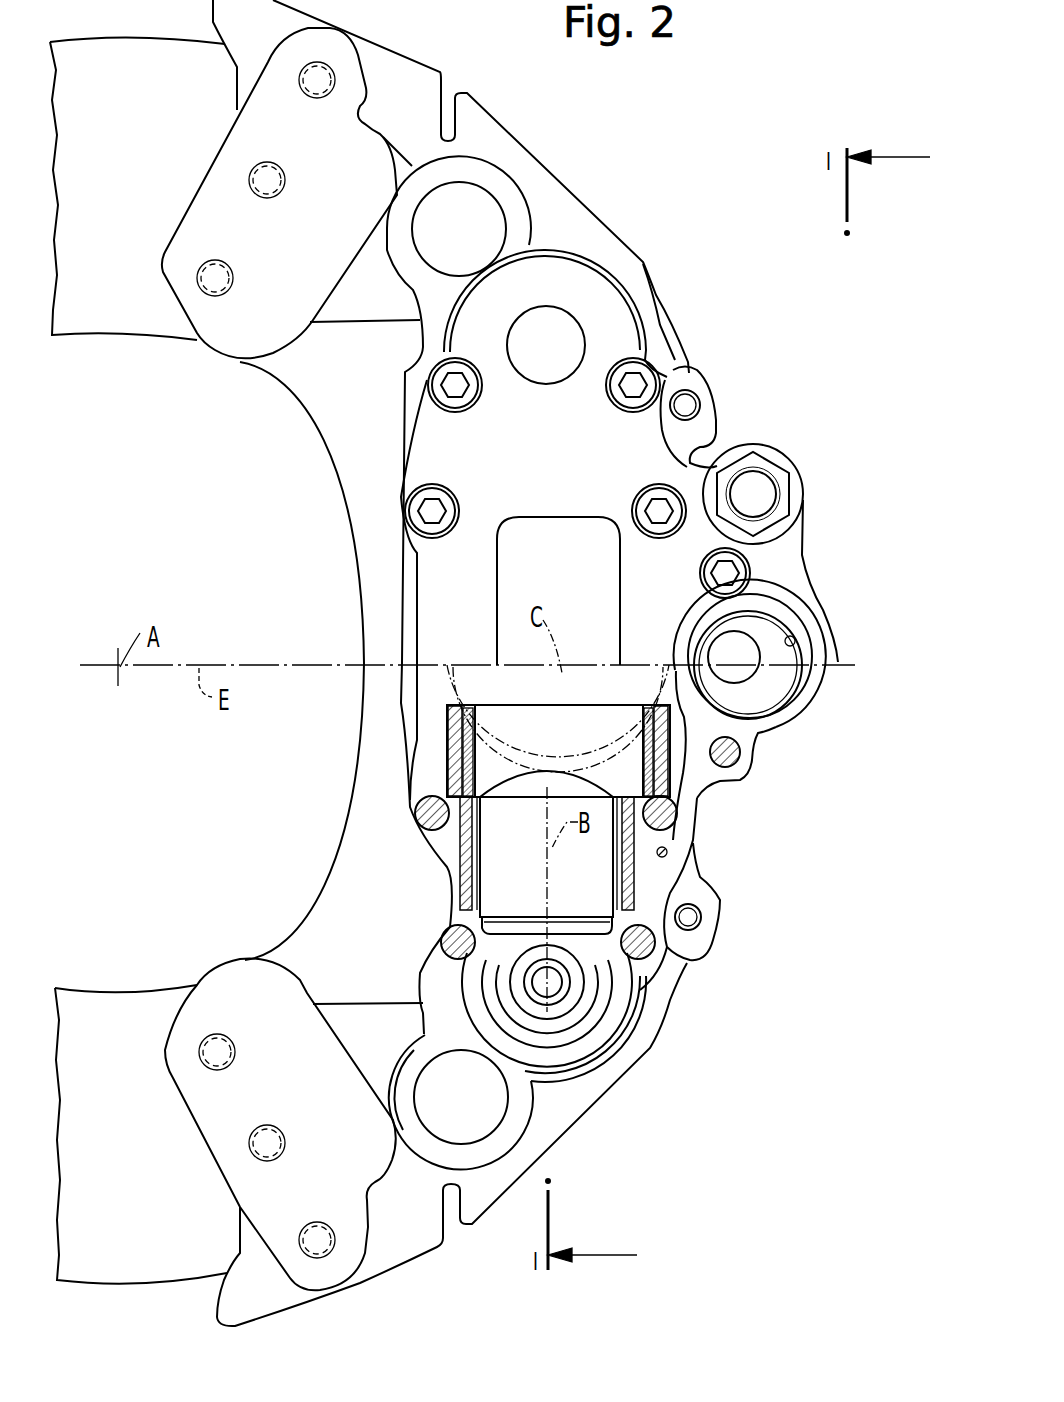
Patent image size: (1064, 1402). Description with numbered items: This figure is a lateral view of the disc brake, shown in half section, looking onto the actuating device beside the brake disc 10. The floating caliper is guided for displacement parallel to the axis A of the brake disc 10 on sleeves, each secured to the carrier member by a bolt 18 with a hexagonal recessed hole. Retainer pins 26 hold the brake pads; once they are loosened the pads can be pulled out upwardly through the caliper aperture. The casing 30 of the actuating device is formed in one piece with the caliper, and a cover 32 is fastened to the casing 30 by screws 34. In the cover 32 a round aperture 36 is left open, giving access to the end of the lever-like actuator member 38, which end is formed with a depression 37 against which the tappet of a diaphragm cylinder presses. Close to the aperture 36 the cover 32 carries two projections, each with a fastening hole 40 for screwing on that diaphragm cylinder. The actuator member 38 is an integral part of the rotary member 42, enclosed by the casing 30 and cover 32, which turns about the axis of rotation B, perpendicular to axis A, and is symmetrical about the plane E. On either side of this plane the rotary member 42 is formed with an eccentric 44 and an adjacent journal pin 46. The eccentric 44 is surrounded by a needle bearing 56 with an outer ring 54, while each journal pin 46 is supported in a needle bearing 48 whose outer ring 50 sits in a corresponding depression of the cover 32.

The brake disc 10 is at (133, 300).
The bolt 18 is at (482, 200).
The retainer pins 26 is at (695, 403).
The casing 30 is at (680, 958).
The cover 32 is at (433, 563).
The screws 34 is at (462, 390).
The round aperture 36 is at (798, 643).
The depression 37 is at (737, 643).
The actuator member 38 is at (710, 687).
The fastening hole 40 is at (763, 490).
The rotary member 42 is at (605, 683).
The eccentric 44 is at (457, 713).
The journal pin 46 is at (487, 866).
The needle bearing 48 is at (622, 838).
The outer ring 50 is at (623, 880).
The outer ring 54 is at (450, 775).
The needle bearing 56 is at (468, 748).